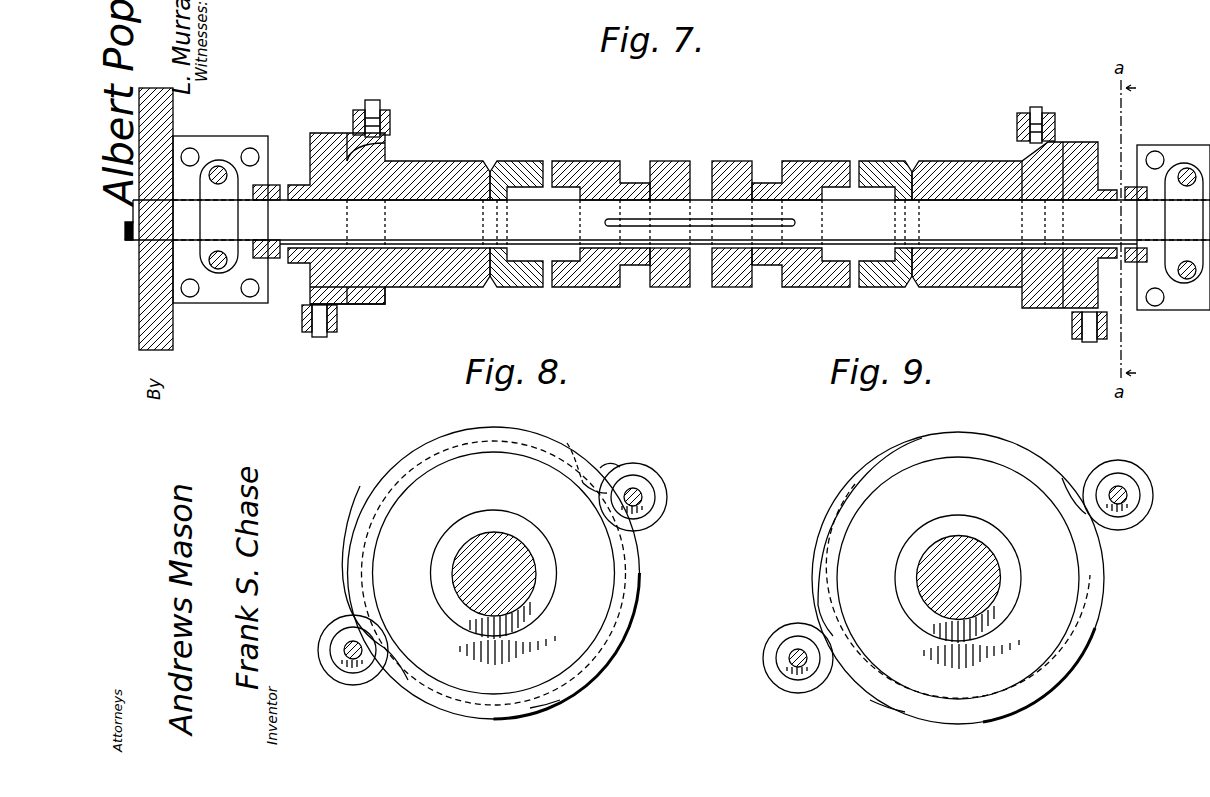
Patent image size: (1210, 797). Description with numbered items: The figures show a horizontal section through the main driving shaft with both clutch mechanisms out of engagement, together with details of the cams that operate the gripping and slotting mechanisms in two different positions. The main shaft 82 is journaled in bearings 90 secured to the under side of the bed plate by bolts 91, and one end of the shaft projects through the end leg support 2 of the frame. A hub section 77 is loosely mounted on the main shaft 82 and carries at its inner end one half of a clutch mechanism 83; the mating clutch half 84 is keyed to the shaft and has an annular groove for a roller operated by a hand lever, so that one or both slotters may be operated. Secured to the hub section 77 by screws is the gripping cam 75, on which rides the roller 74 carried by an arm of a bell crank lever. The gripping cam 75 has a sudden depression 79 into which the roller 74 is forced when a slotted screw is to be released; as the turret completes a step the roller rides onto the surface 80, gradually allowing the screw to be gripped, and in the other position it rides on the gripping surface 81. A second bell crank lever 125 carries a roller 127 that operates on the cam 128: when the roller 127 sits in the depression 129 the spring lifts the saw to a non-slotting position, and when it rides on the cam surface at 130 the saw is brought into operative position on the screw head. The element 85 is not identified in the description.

In FIG. 7, the end leg support 2 is at (172, 130).
In FIG. 7, the bearings 90 is at (184, 212).
In FIG. 7, the bolts 91 is at (225, 165).
In FIG. 7, the main shaft 82 is at (667, 224).
In FIG. 7, the hub section 77 is at (425, 174).
In FIG. 8, the hub section 77 is at (553, 578).
In FIG. 9, the hub section 77 is at (958, 592).
In FIG. 7, the clutch mechanism 83 is at (518, 166).
In FIG. 7, the clutch half 84 is at (606, 170).
In FIG. 7, the collar 85 is at (632, 184).
In FIG. 7, the roller 127 is at (370, 103).
In FIG. 8, the roller 127 is at (664, 490).
In FIG. 9, the roller 127 is at (1140, 518).
In FIG. 7, the bell crank lever 125 is at (388, 134).
In FIG. 7, the cam 128 is at (382, 305).
In FIG. 8, the cam 128 is at (624, 598).
In FIG. 9, the cam 128 is at (1084, 556).
In FIG. 7, the roller 74 is at (305, 336).
In FIG. 8, the roller 74 is at (333, 631).
In FIG. 9, the roller 74 is at (767, 659).
In FIG. 8, the gripping surface 81 is at (553, 443).
In FIG. 9, the gripping surface 81 is at (980, 432).
In FIG. 8, the surface 80 is at (355, 558).
In FIG. 9, the surface 80 is at (857, 484).
In FIG. 8, the cam surface 130 is at (572, 445).
In FIG. 9, the cam surface 130 is at (1063, 478).
In FIG. 8, the depression 129 is at (622, 466).
In FIG. 8, the depression 79 is at (407, 675).
In FIG. 9, the depression 79 is at (818, 608).
In FIG. 8, the gripping cam 75 is at (557, 667).
In FIG. 9, the gripping cam 75 is at (895, 696).